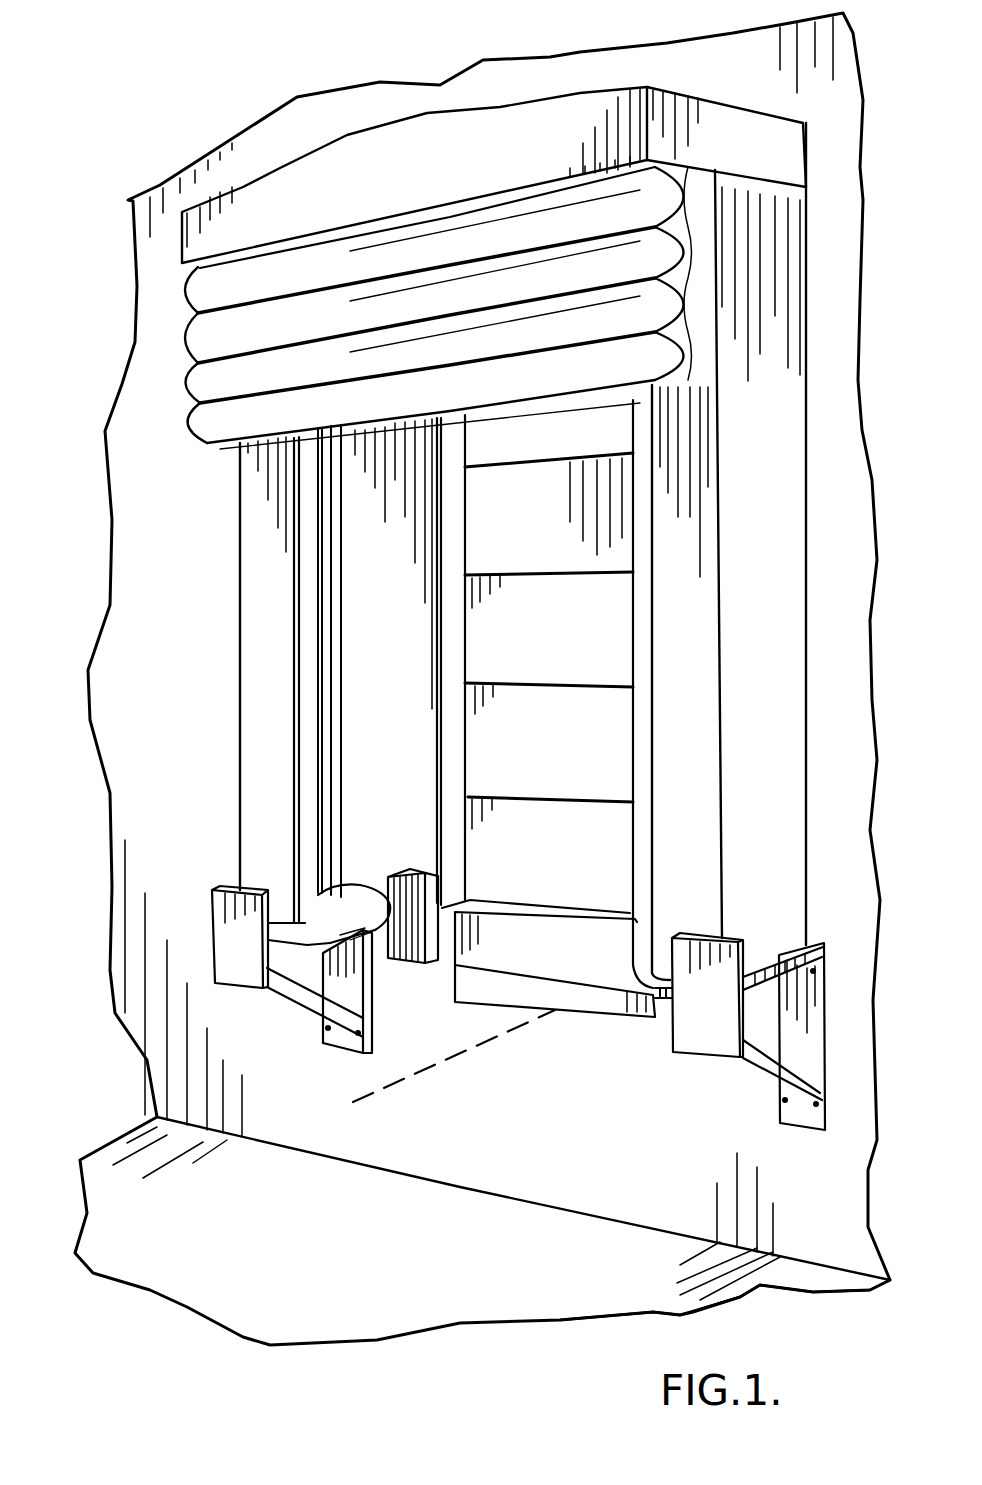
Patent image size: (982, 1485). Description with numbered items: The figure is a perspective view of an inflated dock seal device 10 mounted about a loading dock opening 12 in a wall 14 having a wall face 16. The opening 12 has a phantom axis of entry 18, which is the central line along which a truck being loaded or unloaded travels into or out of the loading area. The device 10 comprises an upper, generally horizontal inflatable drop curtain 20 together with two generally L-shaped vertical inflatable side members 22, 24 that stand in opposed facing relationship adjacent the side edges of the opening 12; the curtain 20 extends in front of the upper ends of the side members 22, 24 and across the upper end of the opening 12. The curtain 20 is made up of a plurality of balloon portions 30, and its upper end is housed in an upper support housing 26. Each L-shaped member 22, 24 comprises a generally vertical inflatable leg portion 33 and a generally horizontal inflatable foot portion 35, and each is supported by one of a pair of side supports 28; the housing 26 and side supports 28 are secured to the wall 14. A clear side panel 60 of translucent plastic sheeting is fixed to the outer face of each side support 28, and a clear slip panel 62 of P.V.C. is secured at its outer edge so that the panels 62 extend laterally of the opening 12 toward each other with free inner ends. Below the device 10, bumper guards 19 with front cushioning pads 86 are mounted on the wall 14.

The dock seal device 10 is at (171, 770).
The opening 12 is at (443, 965).
The wall 14 is at (612, 1139).
The wall face 16 is at (787, 1237).
The phantom axis of entry 18 is at (420, 1073).
The bumper guards 19 is at (707, 1060).
The inflatable drop curtain 20 is at (693, 187).
The inflatable side member 22 is at (313, 622).
The inflatable side member 24 is at (648, 716).
The upper support housing 26 is at (640, 82).
The side supports 28 is at (238, 498).
The balloon portions 30 is at (615, 274).
The leg portion 33 is at (330, 530).
The foot portion 35 is at (367, 903).
The clear side panel 60 is at (773, 823).
The clear slip panel 62 is at (288, 831).
The front cushioning pads 86 is at (728, 1028).